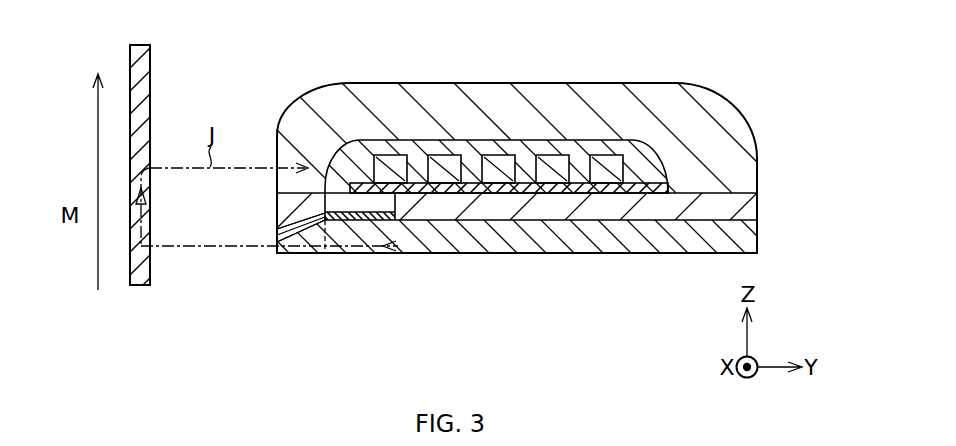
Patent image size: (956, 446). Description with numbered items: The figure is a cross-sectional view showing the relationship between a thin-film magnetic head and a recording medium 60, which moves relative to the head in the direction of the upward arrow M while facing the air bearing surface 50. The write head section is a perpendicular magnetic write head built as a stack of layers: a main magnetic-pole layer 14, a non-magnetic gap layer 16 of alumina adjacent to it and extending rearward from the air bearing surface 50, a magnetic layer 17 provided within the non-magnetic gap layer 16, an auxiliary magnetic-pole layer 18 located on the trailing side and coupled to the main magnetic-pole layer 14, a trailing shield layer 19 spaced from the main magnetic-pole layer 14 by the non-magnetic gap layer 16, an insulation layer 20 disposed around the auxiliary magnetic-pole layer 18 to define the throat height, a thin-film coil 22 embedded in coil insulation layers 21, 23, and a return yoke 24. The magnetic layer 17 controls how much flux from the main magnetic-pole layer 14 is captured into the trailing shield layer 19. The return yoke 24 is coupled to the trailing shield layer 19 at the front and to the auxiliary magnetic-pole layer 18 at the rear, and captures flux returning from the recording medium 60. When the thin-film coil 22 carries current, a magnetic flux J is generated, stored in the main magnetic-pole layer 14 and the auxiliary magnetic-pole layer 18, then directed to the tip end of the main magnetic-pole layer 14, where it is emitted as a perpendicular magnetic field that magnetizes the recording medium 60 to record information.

The main magnetic-pole layer 14 is at (446, 227).
The non-magnetic gap layer 16 is at (281, 238).
The magnetic layer 17 is at (311, 233).
The auxiliary magnetic-pole layer 18 is at (647, 203).
The trailing shield layer 19 is at (316, 198).
The insulation layer 20 is at (335, 198).
The coil insulation layer 21 is at (522, 180).
The thin-film coil 22 is at (550, 160).
The coil insulation layer 23 is at (582, 148).
The return yoke 24 is at (713, 118).
The air bearing surface 50 is at (266, 218).
The recording medium 60 is at (140, 287).